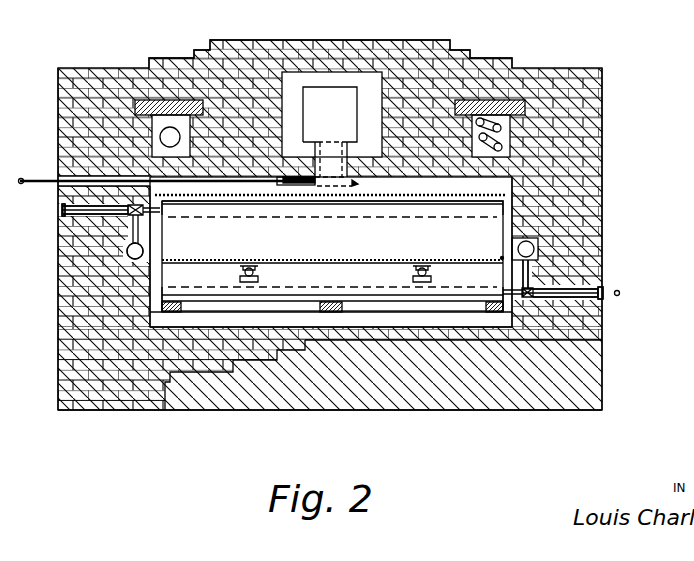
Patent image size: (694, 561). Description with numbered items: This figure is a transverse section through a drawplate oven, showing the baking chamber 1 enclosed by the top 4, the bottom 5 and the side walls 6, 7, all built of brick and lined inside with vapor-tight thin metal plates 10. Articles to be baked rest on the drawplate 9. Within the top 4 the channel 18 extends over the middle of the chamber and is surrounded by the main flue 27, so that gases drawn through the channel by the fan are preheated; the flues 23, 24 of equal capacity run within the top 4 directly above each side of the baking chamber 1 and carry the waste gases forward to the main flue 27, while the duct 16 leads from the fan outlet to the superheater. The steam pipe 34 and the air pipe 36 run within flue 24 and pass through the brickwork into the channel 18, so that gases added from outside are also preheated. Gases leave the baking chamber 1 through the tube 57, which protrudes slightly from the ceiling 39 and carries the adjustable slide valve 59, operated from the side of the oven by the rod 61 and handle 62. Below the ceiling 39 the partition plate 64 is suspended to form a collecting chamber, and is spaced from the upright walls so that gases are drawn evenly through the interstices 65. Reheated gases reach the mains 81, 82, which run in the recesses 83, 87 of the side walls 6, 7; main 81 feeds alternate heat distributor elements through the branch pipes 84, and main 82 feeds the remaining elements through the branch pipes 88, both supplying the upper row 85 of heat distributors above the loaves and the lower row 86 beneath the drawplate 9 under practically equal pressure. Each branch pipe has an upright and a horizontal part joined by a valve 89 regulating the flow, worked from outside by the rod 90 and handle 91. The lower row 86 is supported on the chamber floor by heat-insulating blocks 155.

The baking chamber 1 is at (332, 256).
The top 4 is at (255, 43).
The bottom 5 is at (342, 409).
The side wall 6 is at (58, 296).
The side wall 7 is at (603, 357).
The drawplate 9 is at (63, 207).
The plates 10 is at (512, 222).
The duct 16 is at (110, 130).
The channel 18 is at (330, 114).
The flue 23 is at (169, 108).
The flue 24 is at (525, 108).
The main flue 27 is at (332, 114).
The pipe 34 is at (487, 126).
The pipe 36 is at (510, 143).
The ceiling 39 is at (433, 180).
The tube 57 is at (333, 164).
The slide valve 59 is at (358, 184).
The rod 61 is at (75, 177).
The handle 62 is at (167, 169).
The partition plate 64 is at (402, 185).
The interstices 65 is at (164, 186).
The main 81 is at (127, 252).
The main 82 is at (501, 258).
The recess 83 is at (145, 252).
The branch pipes 84 is at (157, 215).
The upper row of heat distributors 85 is at (275, 218).
The lower row of heat distributors 86 is at (308, 291).
The recess 87 is at (518, 249).
The branch pipes 88 is at (507, 289).
The valve 89 is at (537, 288).
The rod 90 is at (62, 203).
The handle 91 is at (631, 290).
The blocks 155 is at (172, 304).